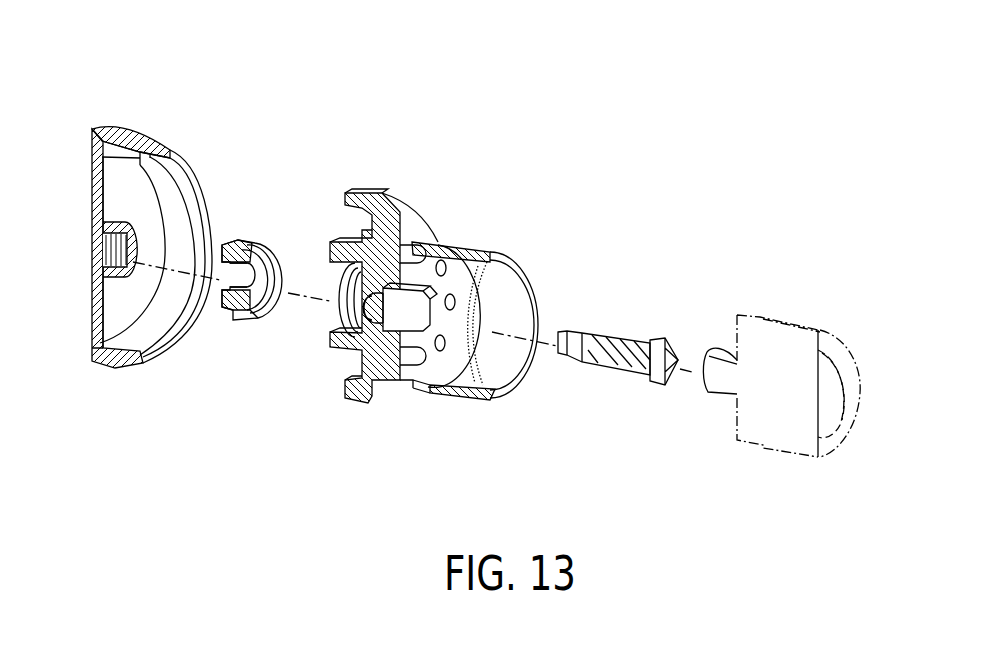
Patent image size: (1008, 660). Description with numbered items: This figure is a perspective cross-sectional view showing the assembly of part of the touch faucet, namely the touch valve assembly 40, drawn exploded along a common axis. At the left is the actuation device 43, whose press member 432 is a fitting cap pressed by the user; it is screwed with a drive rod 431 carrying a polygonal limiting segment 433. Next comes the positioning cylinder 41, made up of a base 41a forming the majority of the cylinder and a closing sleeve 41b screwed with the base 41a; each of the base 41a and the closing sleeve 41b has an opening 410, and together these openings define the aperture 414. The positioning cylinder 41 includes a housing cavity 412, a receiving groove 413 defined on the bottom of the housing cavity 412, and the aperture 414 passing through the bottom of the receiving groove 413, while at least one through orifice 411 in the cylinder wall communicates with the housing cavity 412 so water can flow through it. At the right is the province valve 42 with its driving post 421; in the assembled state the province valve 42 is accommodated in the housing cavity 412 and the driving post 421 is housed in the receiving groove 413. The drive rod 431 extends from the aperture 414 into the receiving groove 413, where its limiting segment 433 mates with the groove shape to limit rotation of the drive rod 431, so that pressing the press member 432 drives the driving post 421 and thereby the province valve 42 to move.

The touch valve assembly 40 is at (439, 192).
The positioning cylinder 41 is at (391, 118).
The base 41a is at (364, 192).
The closing sleeve 41b is at (241, 239).
The opening 410 is at (236, 282).
The through orifice 411 is at (446, 340).
The housing cavity 412 is at (513, 280).
The receiving groove 413 is at (423, 317).
The aperture 414 is at (202, 420).
The province valve 42 is at (778, 298).
The driving post 421 is at (703, 345).
The actuation device 43 is at (124, 108).
The drive rod 431 is at (607, 332).
The press member 432 is at (150, 126).
The limiting segment 433 is at (655, 337).